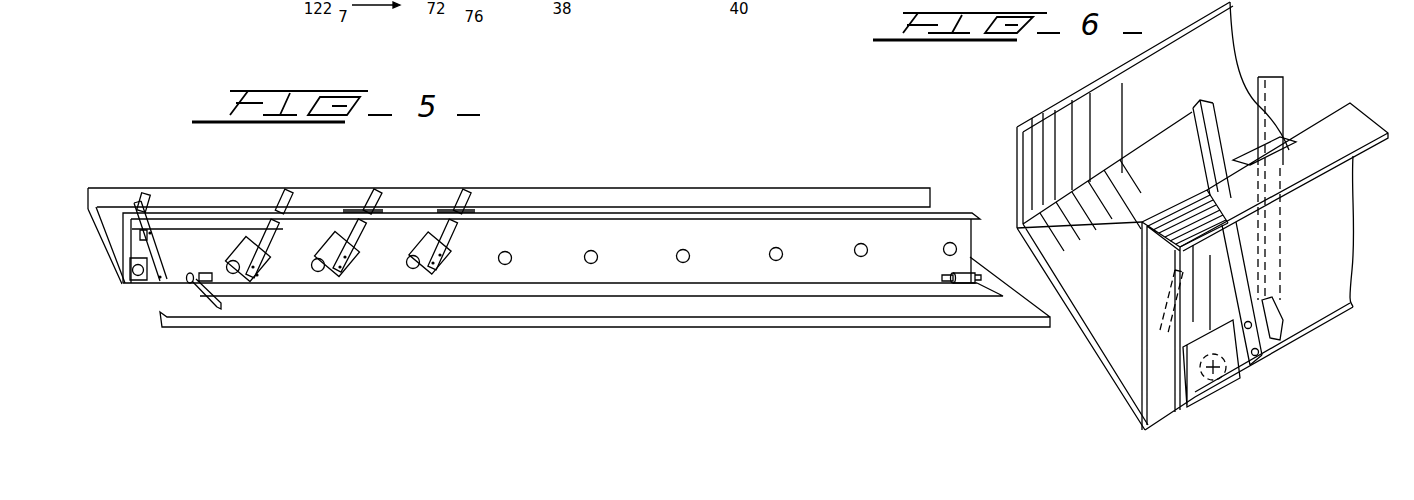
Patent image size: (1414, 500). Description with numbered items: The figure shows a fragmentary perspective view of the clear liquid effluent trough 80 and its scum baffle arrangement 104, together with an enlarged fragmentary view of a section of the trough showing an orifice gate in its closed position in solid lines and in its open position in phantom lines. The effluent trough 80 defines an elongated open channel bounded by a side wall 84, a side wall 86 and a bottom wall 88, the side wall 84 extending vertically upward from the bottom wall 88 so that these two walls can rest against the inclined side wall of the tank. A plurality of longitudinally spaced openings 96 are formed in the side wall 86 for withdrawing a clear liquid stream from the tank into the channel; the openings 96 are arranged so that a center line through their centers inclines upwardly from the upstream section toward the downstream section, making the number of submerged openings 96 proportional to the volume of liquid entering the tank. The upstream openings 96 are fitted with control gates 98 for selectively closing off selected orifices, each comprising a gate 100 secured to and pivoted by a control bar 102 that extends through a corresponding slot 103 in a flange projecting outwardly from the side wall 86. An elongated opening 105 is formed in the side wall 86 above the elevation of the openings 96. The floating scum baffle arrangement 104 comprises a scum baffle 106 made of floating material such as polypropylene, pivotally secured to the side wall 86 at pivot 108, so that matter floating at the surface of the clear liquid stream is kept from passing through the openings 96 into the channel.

In FIG. 5, the effluent trough 80 is at (787, 180).
In FIG. 6, the effluent trough 80 is at (1316, 112).
In FIG. 5, the side wall 84 is at (130, 198).
In FIG. 6, the side wall 84 is at (1157, 87).
In FIG. 5, the side wall 86 is at (135, 248).
In FIG. 6, the side wall 86 is at (1333, 210).
In FIG. 5, the bottom wall 88 is at (100, 237).
In FIG. 6, the bottom wall 88 is at (1105, 305).
In FIG. 5, the openings 96 is at (500, 264).
In FIG. 6, the openings 96 is at (1220, 372).
In FIG. 5, the control gates 98 is at (242, 230).
In FIG. 6, the control gates 98 is at (1284, 338).
In FIG. 5, the gate 100 is at (245, 262).
In FIG. 6, the gate 100 is at (1198, 393).
In FIG. 5, the control bar 102 is at (273, 237).
In FIG. 6, the control bar 102 is at (1210, 123).
In FIG. 5, the slot 103 is at (262, 196).
In FIG. 6, the slot 103 is at (1244, 105).
In FIG. 5, the floating scum baffle arrangement 104 is at (553, 332).
In FIG. 5, the elongated opening 105 is at (202, 232).
In FIG. 5, the scum baffle 106 is at (767, 303).
In FIG. 5, the pivot 108 is at (190, 282).